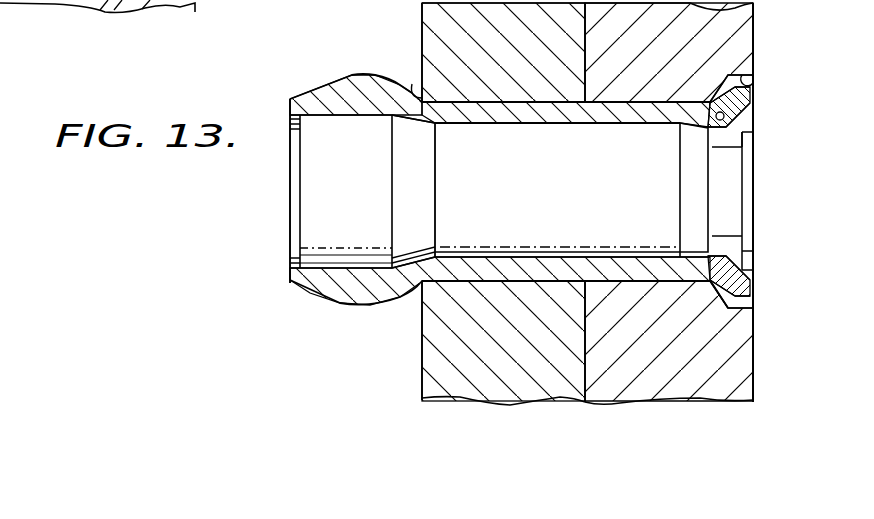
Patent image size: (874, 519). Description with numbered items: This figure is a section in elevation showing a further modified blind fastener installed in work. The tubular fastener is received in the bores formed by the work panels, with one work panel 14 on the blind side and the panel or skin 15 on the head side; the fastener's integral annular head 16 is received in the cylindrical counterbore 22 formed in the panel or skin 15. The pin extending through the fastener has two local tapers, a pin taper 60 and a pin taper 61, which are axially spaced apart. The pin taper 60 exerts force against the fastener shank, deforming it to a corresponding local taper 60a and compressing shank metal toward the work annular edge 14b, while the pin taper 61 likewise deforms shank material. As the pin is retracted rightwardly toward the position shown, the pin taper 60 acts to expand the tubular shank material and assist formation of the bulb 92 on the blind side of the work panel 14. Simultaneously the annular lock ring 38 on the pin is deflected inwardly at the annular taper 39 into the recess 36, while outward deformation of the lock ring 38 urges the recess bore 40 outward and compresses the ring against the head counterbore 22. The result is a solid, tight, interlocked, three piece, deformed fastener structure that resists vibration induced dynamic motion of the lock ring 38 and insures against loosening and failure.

The work panel 14 is at (428, 367).
The work annular edge 14b is at (413, 88).
The panel or skin 15 is at (737, 362).
The annular head 16 is at (762, 290).
The cylindrical counterbore 22 is at (753, 78).
The recess 36 is at (744, 142).
The lock ring 38 is at (745, 118).
The annular taper 39 is at (716, 112).
The recess bore 40 is at (755, 272).
The pin taper 60 is at (418, 203).
The shank local taper 60a is at (406, 126).
The pin taper 61 is at (687, 178).
The bulb 92 is at (328, 309).